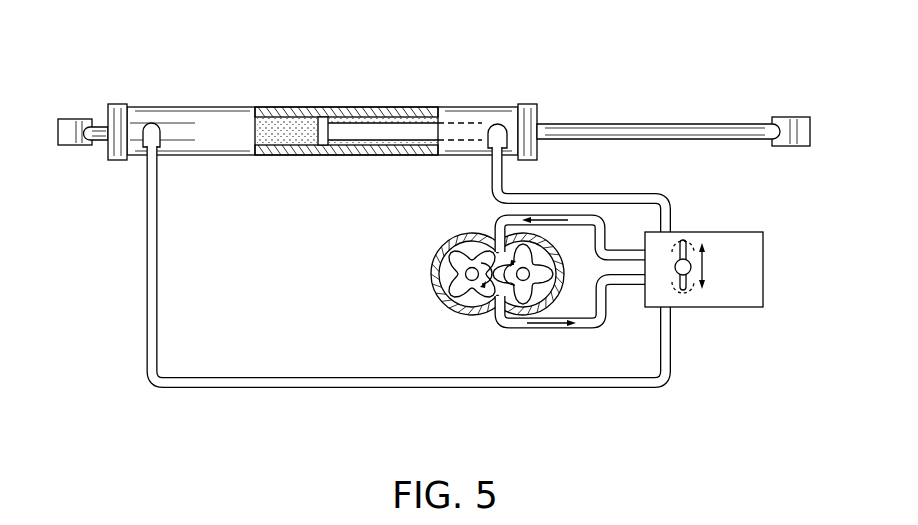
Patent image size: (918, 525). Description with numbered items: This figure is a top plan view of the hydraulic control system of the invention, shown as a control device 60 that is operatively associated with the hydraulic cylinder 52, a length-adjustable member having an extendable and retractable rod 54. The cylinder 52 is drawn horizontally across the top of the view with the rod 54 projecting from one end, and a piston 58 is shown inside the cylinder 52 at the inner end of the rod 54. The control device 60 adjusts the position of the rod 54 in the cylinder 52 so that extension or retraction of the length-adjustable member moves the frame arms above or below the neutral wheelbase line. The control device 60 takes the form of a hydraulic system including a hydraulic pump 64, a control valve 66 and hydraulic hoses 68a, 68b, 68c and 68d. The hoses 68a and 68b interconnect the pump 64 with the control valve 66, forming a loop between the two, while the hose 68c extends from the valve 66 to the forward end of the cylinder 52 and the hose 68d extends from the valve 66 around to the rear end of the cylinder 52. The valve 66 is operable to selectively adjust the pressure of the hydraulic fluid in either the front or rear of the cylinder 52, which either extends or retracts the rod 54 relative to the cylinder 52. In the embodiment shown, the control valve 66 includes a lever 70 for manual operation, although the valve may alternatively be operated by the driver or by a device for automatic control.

The hydraulic cylinder 52 is at (453, 105).
The rod 54 is at (610, 125).
The piston 58 is at (326, 156).
The control device 60 is at (727, 53).
The hydraulic pump 64 is at (432, 277).
The control valve 66 is at (737, 232).
The hydraulic hose 68a is at (608, 232).
The hydraulic hose 68b is at (601, 333).
The hydraulic hose 68c is at (595, 193).
The hydraulic hose 68d is at (302, 388).
The lever 70 is at (688, 280).